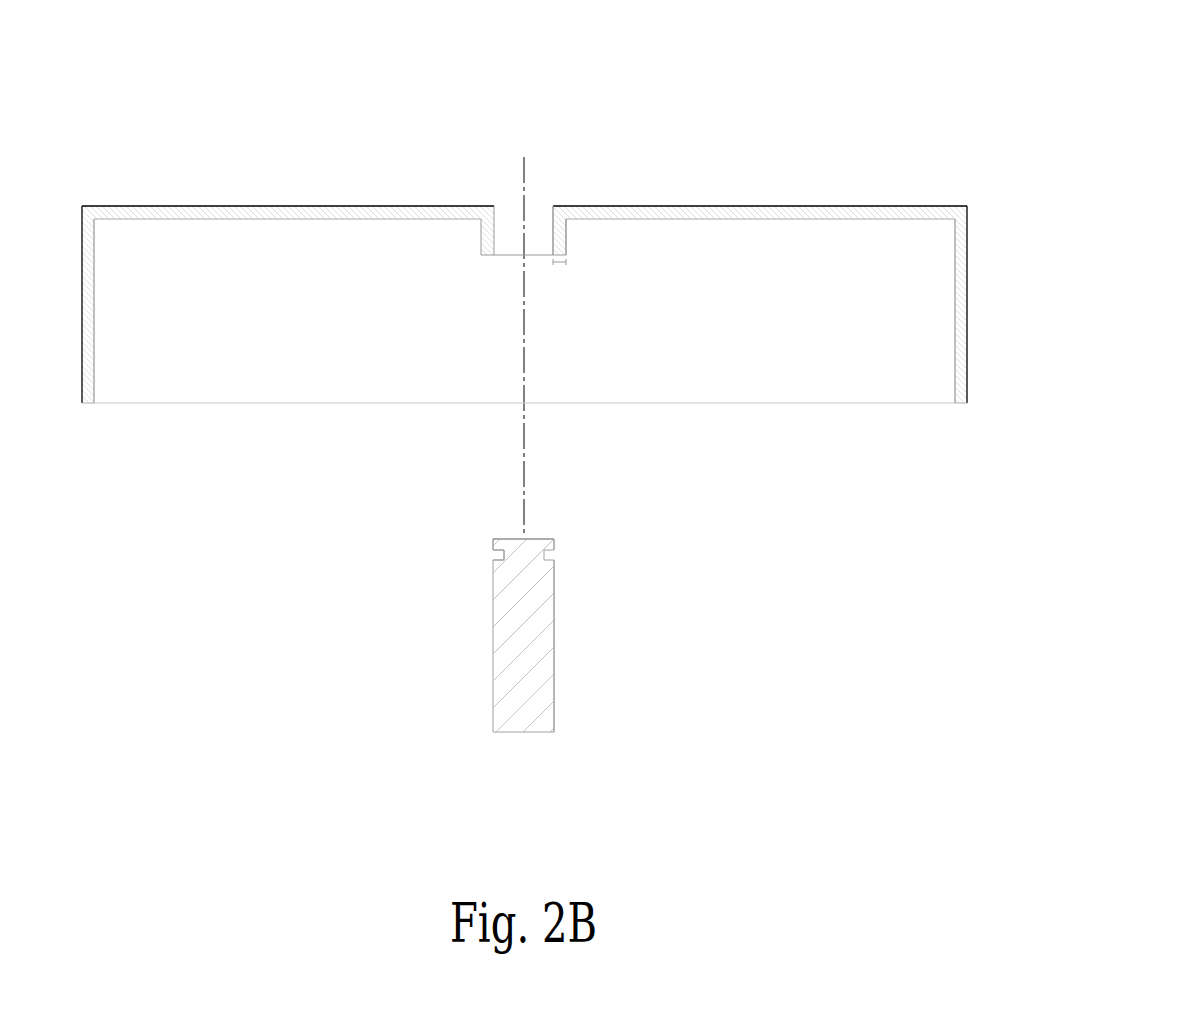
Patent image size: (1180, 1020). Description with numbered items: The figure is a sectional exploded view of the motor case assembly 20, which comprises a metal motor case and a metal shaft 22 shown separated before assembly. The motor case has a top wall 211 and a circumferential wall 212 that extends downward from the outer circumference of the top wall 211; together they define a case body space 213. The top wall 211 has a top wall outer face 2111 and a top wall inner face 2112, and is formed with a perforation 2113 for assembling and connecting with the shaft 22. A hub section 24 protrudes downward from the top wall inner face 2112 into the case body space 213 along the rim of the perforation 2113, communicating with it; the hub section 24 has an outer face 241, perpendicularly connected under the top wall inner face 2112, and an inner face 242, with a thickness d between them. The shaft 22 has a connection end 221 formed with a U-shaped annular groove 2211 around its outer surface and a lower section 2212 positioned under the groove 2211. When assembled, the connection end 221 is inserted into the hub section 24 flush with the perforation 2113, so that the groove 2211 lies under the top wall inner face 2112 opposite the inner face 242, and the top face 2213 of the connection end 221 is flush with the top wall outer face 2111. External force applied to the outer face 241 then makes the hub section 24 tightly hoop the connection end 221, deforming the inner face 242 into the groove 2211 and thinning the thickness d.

The motor case assembly 20 is at (1156, 77).
The top wall 211 is at (712, 160).
The top wall outer face 2111 is at (843, 207).
The top wall inner face 2112 is at (893, 220).
The perforation 2113 is at (511, 207).
The circumferential wall 212 is at (1014, 236).
The case body space 213 is at (834, 365).
The hub section 24 is at (440, 242).
The outer face 241 is at (567, 237).
The inner face 242 is at (539, 257).
The thickness d is at (558, 265).
The shaft 22 is at (500, 637).
The connection end 221 is at (563, 519).
The groove 2211 is at (499, 555).
The lower section 2212 is at (555, 568).
The top face 2213 is at (512, 537).